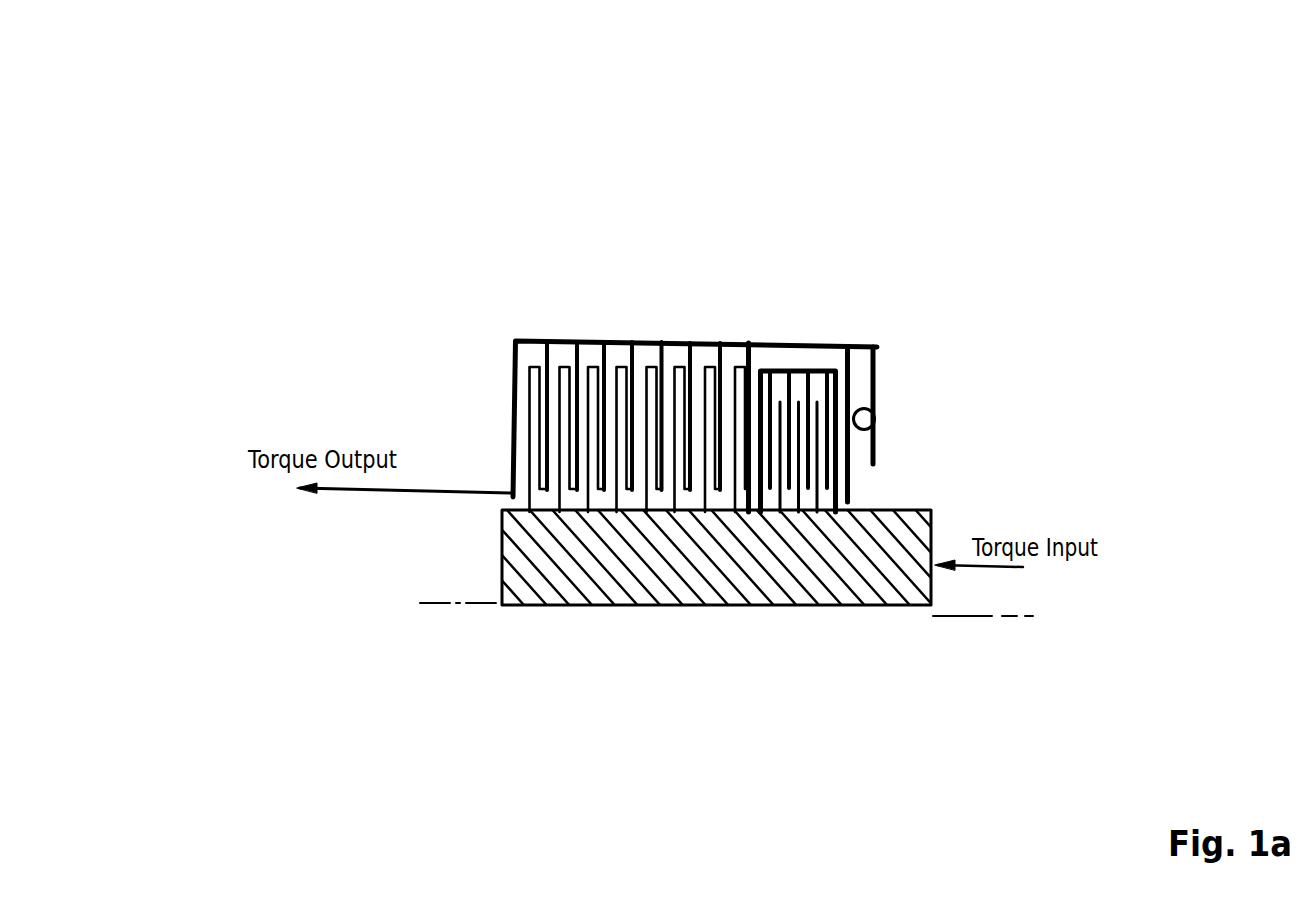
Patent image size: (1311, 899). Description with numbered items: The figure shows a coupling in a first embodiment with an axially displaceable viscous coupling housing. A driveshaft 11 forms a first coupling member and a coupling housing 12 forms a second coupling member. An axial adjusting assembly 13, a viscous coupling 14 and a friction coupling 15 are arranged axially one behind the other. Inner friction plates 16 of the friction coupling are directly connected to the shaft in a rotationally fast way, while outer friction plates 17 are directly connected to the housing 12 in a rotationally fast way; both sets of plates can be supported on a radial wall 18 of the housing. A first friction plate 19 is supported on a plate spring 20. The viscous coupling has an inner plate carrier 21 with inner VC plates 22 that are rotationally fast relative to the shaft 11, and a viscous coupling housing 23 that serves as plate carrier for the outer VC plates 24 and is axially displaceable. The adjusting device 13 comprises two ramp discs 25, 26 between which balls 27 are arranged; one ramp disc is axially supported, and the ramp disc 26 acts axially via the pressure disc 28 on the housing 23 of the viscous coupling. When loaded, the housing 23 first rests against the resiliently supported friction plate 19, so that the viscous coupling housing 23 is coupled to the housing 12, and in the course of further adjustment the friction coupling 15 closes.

The driveshaft 11 is at (927, 520).
The coupling housing 12 is at (565, 337).
The axial adjusting assembly 13 is at (960, 210).
The viscous coupling 14 is at (836, 210).
The friction coupling 15 is at (626, 200).
The inner friction plates 16 is at (614, 488).
The outer friction plates 17 is at (663, 340).
The radial wall 18 is at (513, 412).
The first friction plate 19 is at (742, 343).
The plate spring 20 is at (733, 487).
The inner plate carrier 21 is at (815, 493).
The inner VC plates 22 is at (838, 512).
The viscous coupling housing 23 is at (815, 369).
The outer VC plates 24 is at (787, 369).
The ramp disc 25 is at (880, 403).
The ramp disc 26 is at (872, 346).
The balls 27 is at (876, 390).
The pressure disc 28 is at (852, 480).